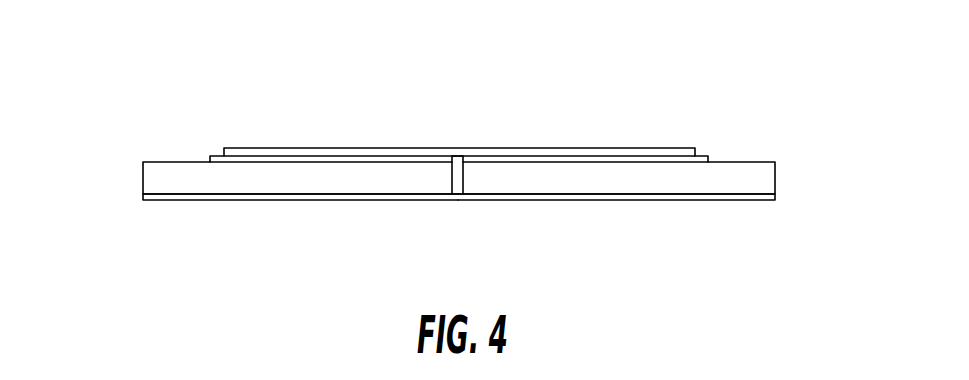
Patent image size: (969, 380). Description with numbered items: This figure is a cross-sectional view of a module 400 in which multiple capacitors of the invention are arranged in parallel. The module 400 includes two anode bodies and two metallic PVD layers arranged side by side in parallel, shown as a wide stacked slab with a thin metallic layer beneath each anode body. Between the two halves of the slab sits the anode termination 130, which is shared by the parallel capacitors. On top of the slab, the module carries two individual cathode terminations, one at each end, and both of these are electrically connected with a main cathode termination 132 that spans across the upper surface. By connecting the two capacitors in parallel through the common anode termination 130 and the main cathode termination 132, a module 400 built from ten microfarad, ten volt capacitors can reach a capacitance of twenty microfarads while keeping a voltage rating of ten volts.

The module 400 is at (631, 107).
The main cathode termination 132 is at (427, 148).
The anode termination 130 is at (440, 201).